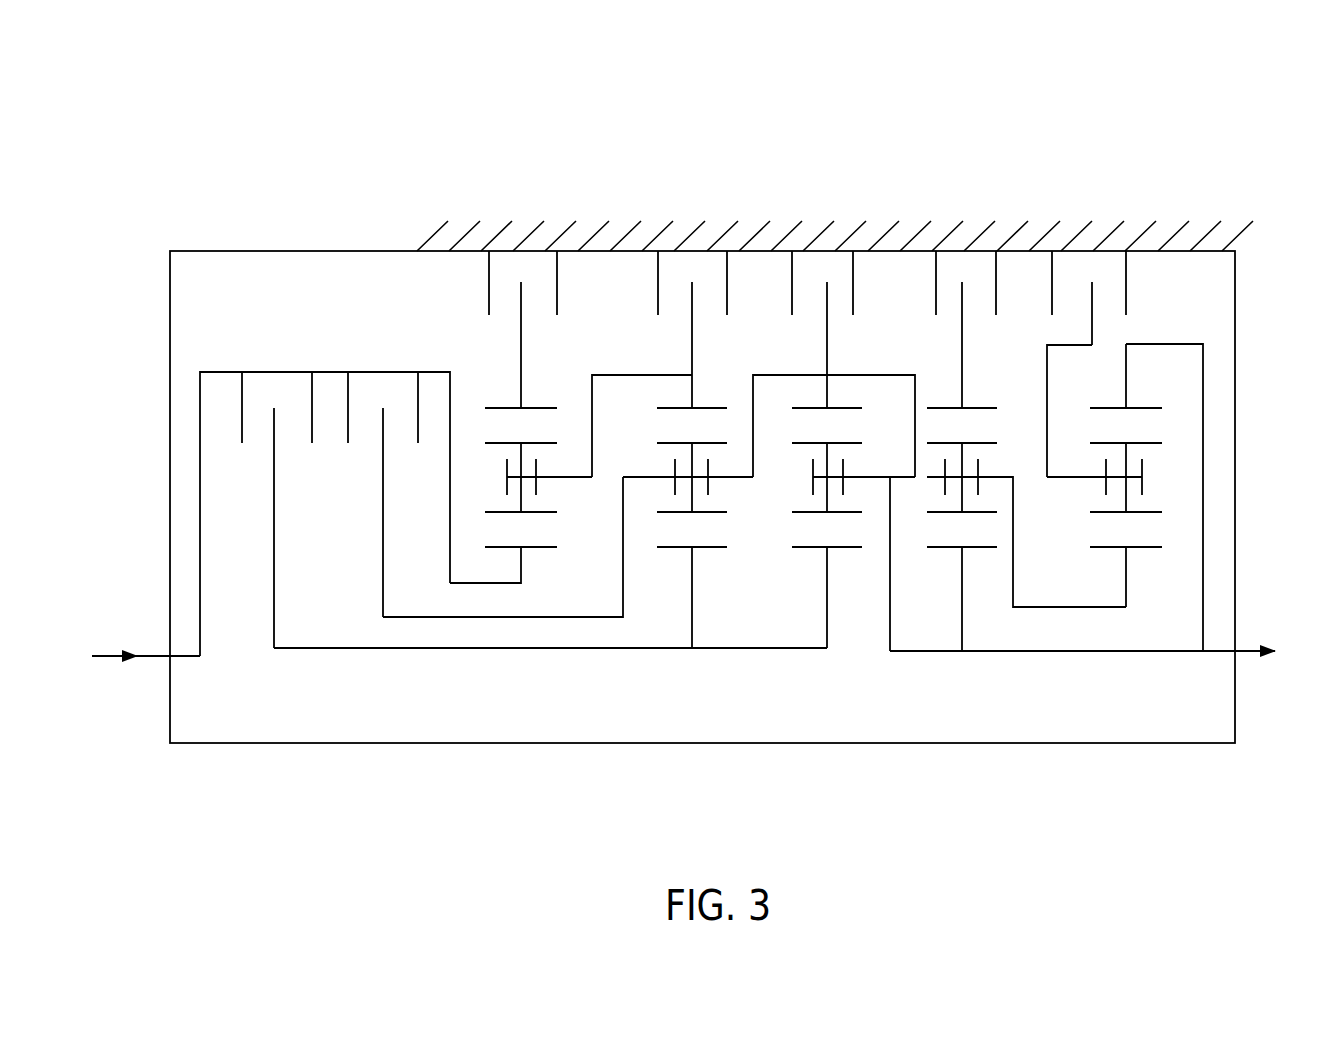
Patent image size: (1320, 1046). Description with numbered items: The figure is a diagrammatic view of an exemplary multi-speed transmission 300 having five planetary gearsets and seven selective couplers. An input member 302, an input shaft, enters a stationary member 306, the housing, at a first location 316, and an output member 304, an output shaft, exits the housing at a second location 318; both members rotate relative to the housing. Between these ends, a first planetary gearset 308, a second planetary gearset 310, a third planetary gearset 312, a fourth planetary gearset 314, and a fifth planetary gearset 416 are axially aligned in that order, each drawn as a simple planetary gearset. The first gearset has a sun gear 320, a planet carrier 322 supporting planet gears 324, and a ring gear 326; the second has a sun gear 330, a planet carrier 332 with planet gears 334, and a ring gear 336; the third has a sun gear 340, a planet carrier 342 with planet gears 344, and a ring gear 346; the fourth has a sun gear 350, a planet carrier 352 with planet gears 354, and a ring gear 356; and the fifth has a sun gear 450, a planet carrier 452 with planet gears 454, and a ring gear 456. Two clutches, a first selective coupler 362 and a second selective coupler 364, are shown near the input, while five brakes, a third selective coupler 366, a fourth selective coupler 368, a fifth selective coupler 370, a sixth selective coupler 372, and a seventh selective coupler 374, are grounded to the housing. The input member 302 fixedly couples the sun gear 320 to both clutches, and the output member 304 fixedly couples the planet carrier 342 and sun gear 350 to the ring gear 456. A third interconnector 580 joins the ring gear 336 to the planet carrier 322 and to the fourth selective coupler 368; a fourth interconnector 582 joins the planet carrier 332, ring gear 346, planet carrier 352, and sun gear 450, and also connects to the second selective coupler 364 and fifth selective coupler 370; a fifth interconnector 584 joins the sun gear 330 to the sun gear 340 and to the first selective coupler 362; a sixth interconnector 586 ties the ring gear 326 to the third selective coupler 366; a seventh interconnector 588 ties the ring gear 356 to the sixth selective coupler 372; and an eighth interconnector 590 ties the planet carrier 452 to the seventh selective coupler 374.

The multi-speed transmission 300 is at (1237, 152).
The input member 302 is at (108, 658).
The output member 304 is at (1245, 656).
The stationary member 306 is at (248, 250).
The first planetary gearset 308 is at (527, 589).
The second planetary gearset 310 is at (579, 589).
The third planetary gearset 312 is at (835, 584).
The fourth planetary gearset 314 is at (1009, 589).
The first location 316 is at (148, 548).
The second location 318 is at (1254, 548).
The sun gear 320 is at (537, 550).
The planet carrier 322 is at (539, 490).
The planet gears 324 is at (519, 507).
The ring gear 326 is at (536, 406).
The sun gear 330 is at (707, 550).
The planet carrier 332 is at (711, 490).
The planet gears 334 is at (690, 507).
The ring gear 336 is at (705, 406).
The sun gear 340 is at (844, 550).
The planet carrier 342 is at (846, 462).
The planet gears 344 is at (824, 452).
The ring gear 346 is at (845, 406).
The sun gear 350 is at (979, 550).
The planet carrier 352 is at (980, 468).
The planet gears 354 is at (960, 500).
The ring gear 356 is at (976, 406).
The first selective coupler 362 is at (287, 328).
The second selective coupler 364 is at (389, 328).
The third selective coupler 366 is at (530, 210).
The fourth selective coupler 368 is at (700, 210).
The fifth selective coupler 370 is at (836, 210).
The sixth selective coupler 372 is at (976, 210).
The seventh selective coupler 374 is at (1098, 210).
The fifth planetary gearset 416 is at (1102, 589).
The sun gear 450 is at (1142, 550).
The planet carrier 452 is at (1103, 468).
The planet gears 454 is at (1126, 505).
The ring gear 456 is at (1138, 406).
The third interconnector 580 is at (623, 373).
The fourth interconnector 582 is at (776, 373).
The fifth interconnector 584 is at (766, 647).
The sixth interconnector 586 is at (519, 366).
The seventh interconnector 588 is at (960, 334).
The eighth interconnector 590 is at (1094, 326).